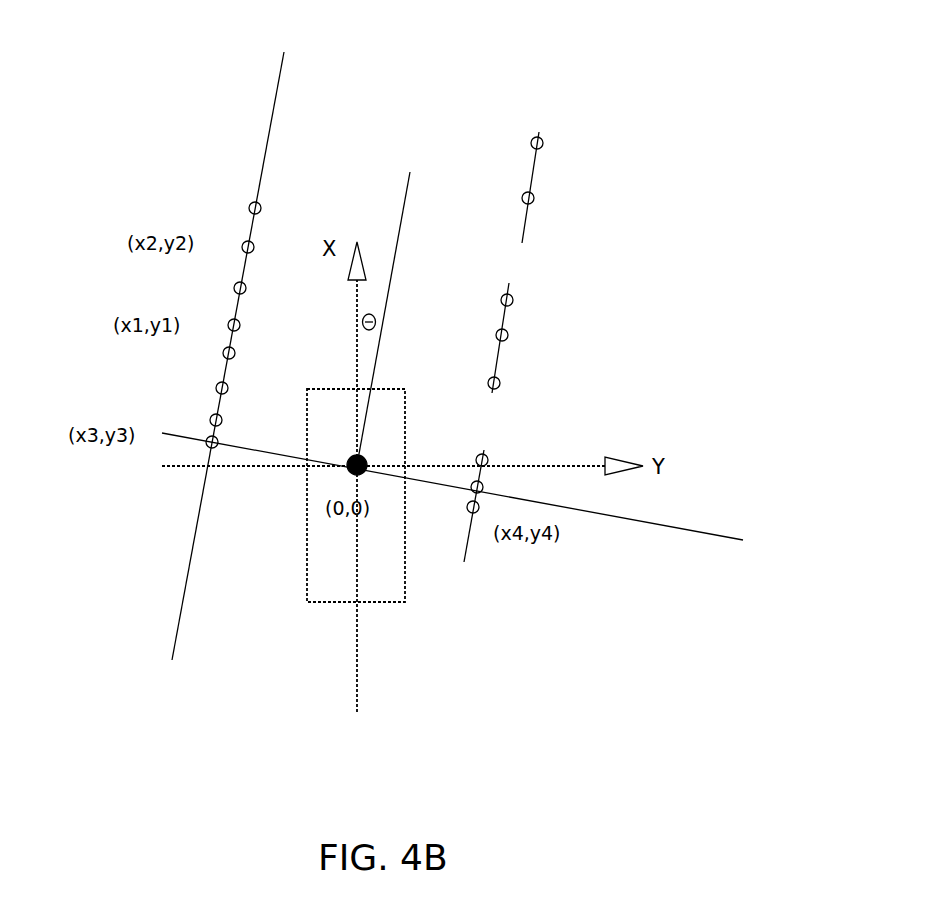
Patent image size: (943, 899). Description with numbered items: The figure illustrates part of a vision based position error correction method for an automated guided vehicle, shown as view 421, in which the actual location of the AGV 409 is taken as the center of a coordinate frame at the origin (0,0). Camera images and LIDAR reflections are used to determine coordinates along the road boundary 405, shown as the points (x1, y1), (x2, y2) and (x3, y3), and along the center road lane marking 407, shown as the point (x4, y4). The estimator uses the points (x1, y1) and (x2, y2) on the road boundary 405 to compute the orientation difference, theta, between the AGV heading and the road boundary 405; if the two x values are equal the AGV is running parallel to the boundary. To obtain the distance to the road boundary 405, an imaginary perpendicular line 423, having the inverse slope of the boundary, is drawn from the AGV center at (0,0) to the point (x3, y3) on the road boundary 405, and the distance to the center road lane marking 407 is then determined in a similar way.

The road boundary 405 is at (228, 356).
The center road lane marking 407 is at (524, 338).
The actual location of the AGV 409 is at (356, 495).
The vision based AGV position error correction view 421 is at (572, 153).
The imaginary perpendicular line 423 is at (468, 486).